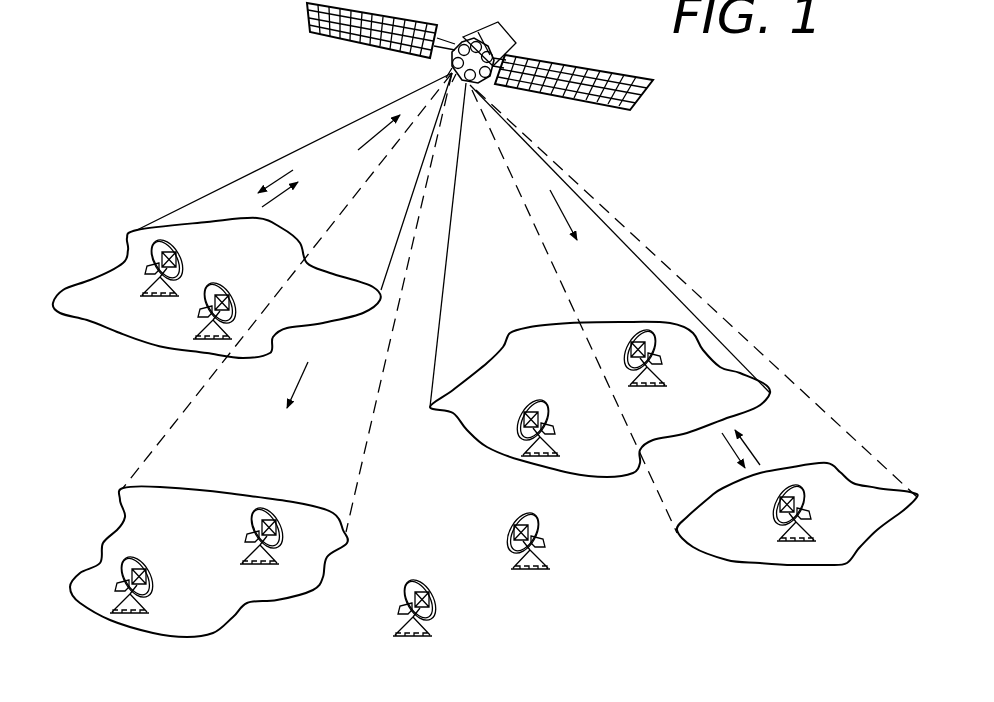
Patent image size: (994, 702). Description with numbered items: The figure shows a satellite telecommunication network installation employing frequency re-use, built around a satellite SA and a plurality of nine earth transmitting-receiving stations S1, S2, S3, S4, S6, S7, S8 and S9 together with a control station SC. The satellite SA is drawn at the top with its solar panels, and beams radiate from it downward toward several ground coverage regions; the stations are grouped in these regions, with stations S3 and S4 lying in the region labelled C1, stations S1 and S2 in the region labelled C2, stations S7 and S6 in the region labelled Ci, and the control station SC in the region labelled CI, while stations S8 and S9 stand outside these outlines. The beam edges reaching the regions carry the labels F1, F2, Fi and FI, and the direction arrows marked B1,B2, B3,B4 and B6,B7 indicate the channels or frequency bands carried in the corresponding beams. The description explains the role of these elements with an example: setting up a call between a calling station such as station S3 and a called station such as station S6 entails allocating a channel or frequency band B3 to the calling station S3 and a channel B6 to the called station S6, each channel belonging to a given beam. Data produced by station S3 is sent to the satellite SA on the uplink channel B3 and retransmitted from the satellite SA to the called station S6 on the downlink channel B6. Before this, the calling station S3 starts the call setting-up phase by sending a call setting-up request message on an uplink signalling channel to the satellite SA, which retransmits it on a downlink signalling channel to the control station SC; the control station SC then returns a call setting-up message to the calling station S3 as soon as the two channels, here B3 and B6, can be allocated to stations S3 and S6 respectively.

The satellite SA is at (497, 26).
The first beam footprint F1 is at (197, 203).
The second beam footprint F2 is at (369, 453).
The i-th beam footprint Fi is at (652, 270).
The I-th beam footprint FI is at (748, 351).
The beams B1 and B2 B1,B2 is at (275, 402).
The channel or frequency band B3 B3,B4 is at (287, 280).
The channel B6 B6,B7 is at (585, 231).
The earth transmitting-receiving station S1 is at (138, 563).
The earth transmitting-receiving station S2 is at (263, 567).
The calling station S3 is at (160, 297).
The earth transmitting-receiving station S4 is at (222, 288).
The called station S6 is at (650, 388).
The earth transmitting-receiving station S7 is at (522, 398).
The earth transmitting-receiving station S8 is at (530, 572).
The earth transmitting-receiving station S9 is at (410, 638).
The control station SC is at (783, 538).
The coverage zone C1 is at (140, 347).
The coverage zone C2 is at (220, 620).
The coverage zone Ci is at (613, 463).
The coverage zone CI is at (825, 555).